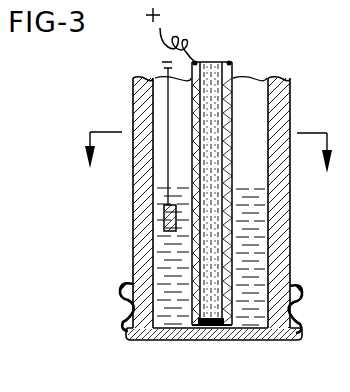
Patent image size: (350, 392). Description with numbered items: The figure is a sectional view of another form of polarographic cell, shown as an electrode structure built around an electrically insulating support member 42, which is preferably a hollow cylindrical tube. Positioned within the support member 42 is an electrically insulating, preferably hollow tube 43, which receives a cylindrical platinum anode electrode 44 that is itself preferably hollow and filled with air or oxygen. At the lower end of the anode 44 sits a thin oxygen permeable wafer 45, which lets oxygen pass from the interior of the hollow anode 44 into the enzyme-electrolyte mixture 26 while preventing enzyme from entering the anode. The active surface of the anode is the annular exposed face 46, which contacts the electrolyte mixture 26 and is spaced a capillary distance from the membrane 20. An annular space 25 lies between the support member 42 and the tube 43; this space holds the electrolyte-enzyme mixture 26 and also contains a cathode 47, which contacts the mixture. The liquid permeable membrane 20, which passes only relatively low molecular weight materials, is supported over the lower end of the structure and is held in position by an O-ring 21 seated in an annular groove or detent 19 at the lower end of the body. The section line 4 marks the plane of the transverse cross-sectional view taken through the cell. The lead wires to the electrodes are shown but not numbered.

The section line 4- 4 is at (208, 137).
The annular groove or detent 19 is at (293, 328).
The membrane 20 is at (163, 340).
The O-ring 21 is at (130, 306).
The annular space 25 is at (260, 115).
The enzyme-electrolyte mixture 26 is at (253, 230).
The support member 42 is at (138, 98).
The tube 43 is at (244, 90).
The platinum anode electrode 44 is at (218, 62).
The oxygen permeable wafer 45 is at (205, 326).
The annular exposed face 46 is at (236, 338).
The cathode 47 is at (170, 228).